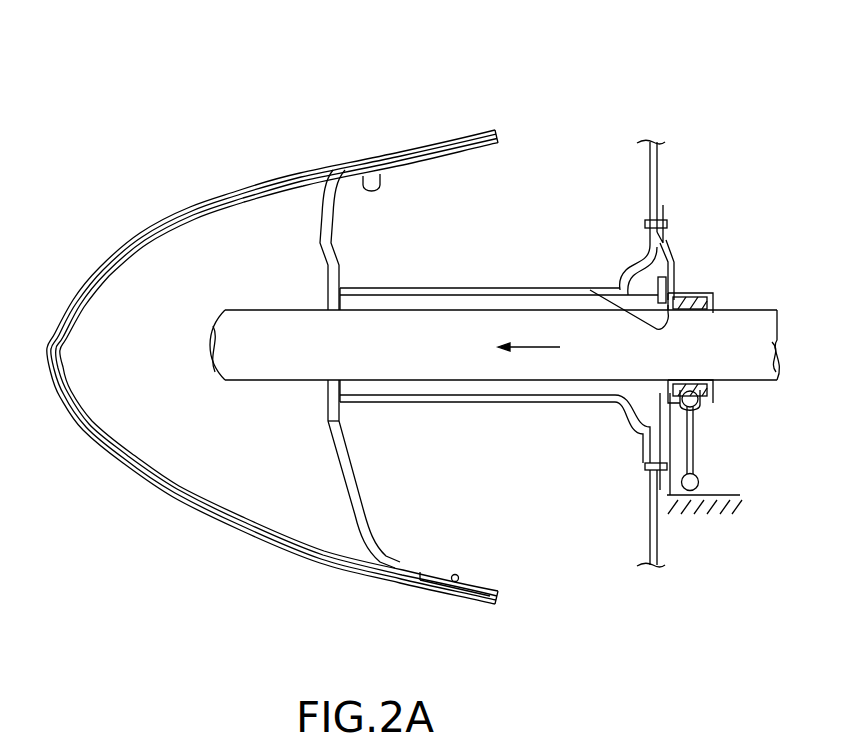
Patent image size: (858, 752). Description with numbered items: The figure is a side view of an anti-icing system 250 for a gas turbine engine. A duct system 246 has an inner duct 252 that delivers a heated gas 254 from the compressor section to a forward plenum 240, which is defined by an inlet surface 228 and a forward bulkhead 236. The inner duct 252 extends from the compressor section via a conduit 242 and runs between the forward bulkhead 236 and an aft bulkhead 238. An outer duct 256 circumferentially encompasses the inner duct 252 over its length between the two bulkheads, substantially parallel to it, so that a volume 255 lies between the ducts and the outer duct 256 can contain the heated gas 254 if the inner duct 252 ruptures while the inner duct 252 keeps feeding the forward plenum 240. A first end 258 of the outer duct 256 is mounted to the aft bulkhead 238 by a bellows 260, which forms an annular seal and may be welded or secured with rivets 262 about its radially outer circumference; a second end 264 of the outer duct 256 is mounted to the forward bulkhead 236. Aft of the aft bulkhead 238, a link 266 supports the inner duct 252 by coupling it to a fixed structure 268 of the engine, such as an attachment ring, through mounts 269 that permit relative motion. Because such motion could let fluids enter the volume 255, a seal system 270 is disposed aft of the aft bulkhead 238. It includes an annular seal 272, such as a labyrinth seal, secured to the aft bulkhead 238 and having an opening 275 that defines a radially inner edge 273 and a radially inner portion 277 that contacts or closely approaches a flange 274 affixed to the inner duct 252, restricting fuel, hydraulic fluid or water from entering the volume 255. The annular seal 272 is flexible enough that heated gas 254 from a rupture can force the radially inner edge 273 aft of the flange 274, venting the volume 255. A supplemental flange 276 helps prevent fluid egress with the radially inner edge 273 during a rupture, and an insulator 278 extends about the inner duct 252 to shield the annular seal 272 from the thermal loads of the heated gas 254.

The inlet surface 228 is at (272, 392).
The forward bulkhead 236 is at (353, 522).
The aft bulkhead 238 is at (657, 538).
The forward plenum 240 is at (207, 470).
The conduit 242 is at (765, 310).
The duct system 246 is at (445, 432).
The anti-icing system 250 is at (245, 98).
The inner duct 252 is at (377, 400).
The heated gas 254 is at (495, 429).
The volume 255 is at (470, 390).
The outer duct 256 is at (383, 287).
The first end 258 is at (610, 432).
The bellows 260 is at (630, 268).
The rivets 262 is at (645, 222).
The second end 264 is at (350, 430).
The link 266 is at (694, 435).
The fixed structure 268 is at (723, 498).
The mounts 269 is at (705, 400).
The seal system 270 is at (680, 200).
The annular seal 272 is at (672, 240).
The radially inner edge 273 is at (657, 388).
The flange 274 is at (670, 278).
The opening 275 is at (590, 290).
The supplemental flange 276 is at (692, 293).
The radially inner portion 277 is at (673, 430).
The insulator 278 is at (712, 295).